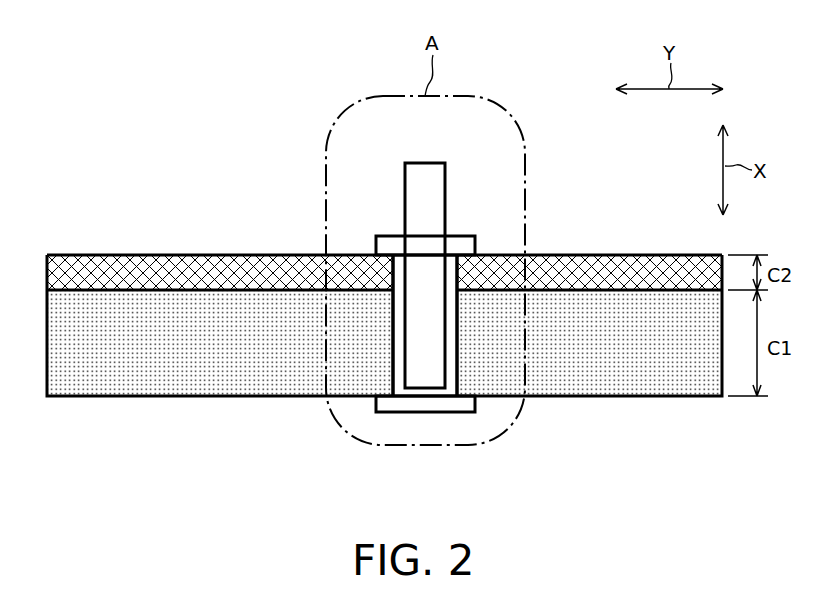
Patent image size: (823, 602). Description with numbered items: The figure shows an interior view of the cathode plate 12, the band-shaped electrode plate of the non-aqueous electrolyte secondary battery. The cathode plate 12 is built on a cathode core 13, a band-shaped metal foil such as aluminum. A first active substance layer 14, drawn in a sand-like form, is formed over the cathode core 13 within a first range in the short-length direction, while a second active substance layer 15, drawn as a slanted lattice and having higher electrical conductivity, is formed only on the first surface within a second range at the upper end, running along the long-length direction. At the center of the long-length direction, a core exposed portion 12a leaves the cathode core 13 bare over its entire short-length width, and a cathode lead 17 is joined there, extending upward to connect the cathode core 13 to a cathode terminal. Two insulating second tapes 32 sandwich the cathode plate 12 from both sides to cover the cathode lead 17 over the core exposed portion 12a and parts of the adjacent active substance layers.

The cathode plate 12 is at (567, 176).
The core exposed portion 12a is at (453, 258).
The cathode core 13 is at (453, 380).
The first active substance layer 14 is at (193, 383).
The second active substance layer 15 is at (202, 255).
The cathode lead 17 is at (425, 170).
The second tape 32 is at (397, 413).